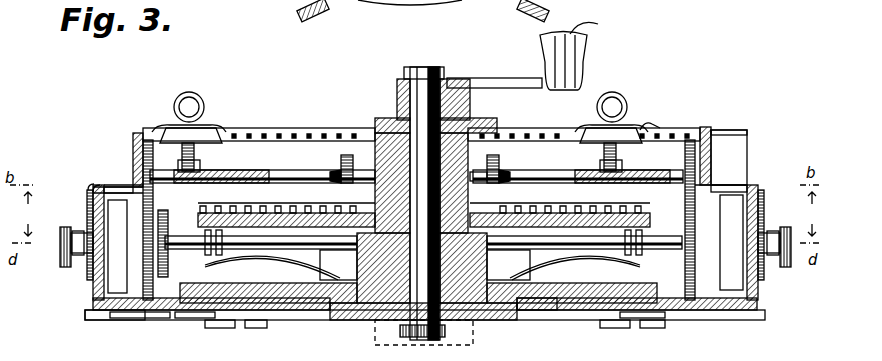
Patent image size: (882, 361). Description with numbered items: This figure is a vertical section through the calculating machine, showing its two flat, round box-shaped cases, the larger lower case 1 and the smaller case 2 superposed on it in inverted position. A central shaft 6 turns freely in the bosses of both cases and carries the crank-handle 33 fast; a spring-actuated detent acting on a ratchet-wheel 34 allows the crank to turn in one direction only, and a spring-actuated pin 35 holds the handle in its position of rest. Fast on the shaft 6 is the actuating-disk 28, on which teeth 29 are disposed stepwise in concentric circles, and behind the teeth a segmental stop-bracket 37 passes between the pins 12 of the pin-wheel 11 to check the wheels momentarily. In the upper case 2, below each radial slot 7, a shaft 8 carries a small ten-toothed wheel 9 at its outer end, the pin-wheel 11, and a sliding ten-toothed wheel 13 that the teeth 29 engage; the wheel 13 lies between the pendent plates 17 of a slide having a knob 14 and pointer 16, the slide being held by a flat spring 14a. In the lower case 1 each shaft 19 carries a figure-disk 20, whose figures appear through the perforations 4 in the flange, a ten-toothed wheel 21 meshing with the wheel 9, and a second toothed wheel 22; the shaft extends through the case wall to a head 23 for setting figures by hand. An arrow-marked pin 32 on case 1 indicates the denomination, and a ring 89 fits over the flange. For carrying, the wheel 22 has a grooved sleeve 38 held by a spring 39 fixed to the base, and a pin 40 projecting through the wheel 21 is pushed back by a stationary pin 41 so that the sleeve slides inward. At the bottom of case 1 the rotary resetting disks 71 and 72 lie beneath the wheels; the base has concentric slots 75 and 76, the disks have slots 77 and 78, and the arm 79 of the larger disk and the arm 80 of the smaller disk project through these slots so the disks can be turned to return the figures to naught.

The case 1 is at (96, 288).
The case 2 is at (118, 165).
The perforation 4 is at (104, 188).
The shaft 6 is at (440, 333).
The radial slot 7 is at (276, 128).
The shaft 8 is at (280, 172).
The small wheel 9 is at (135, 133).
The pin-wheel 11 is at (338, 172).
The pin 12 is at (347, 155).
The ten-toothed wheel 13 is at (204, 170).
The knob 14 is at (195, 95).
The flat spring 14a is at (642, 128).
The pointer 16 is at (402, 120).
The pendent plate 17 is at (190, 136).
The shaft 19 is at (418, 276).
The disk or wheel 20 is at (88, 200).
The ten-toothed wheel 21 is at (745, 148).
The toothed wheel 22 is at (180, 218).
The head 23 is at (64, 268).
The actuating-disk 28 is at (310, 213).
The teeth 29 is at (578, 206).
The pin 32 is at (740, 135).
The crank-handle 33 is at (585, 36).
The spring-actuated detent and ratchet-wheel 34 is at (372, 126).
The spring-actuated pin 35 is at (545, 80).
The segmental stop-bracket 37 is at (483, 160).
The sleeve 38 is at (212, 255).
The spring 39 is at (270, 262).
The pin 40 is at (138, 316).
The stationary pin 41 is at (190, 316).
The rotary disk 71 is at (425, 313).
The rotary disk 72 is at (543, 314).
The concentric slot 75 is at (652, 321).
The concentric slot 76 is at (212, 321).
The slot 77 is at (252, 321).
The slot 78 is at (612, 321).
The arm 79 is at (766, 317).
The arm 80 is at (90, 318).
The ring 89 is at (84, 184).